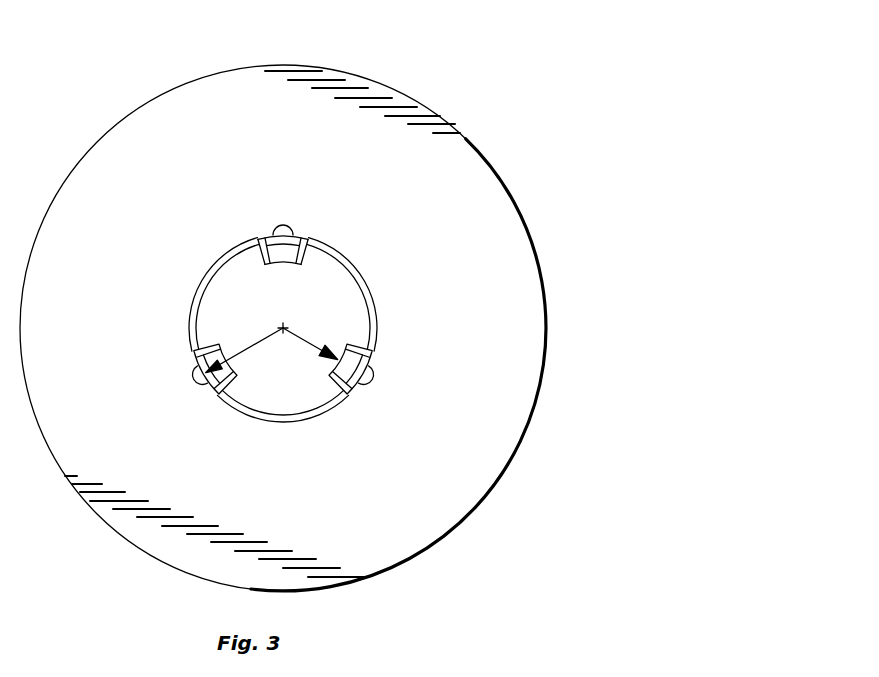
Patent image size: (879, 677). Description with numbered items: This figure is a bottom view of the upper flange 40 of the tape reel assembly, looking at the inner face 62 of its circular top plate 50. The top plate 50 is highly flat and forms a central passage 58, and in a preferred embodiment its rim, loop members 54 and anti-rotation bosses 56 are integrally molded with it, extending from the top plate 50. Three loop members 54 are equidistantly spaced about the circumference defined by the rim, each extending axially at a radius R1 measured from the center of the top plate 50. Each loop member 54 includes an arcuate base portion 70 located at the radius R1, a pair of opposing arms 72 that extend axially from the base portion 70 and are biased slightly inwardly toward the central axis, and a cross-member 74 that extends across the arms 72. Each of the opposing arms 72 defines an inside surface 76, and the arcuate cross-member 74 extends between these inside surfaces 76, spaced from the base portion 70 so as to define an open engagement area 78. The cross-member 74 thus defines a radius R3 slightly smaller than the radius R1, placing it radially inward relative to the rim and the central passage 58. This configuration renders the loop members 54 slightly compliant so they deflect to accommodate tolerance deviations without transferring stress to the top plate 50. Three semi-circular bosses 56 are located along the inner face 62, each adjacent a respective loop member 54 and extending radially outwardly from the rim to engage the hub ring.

The upper flange 40 is at (483, 72).
The top plate 50 is at (455, 153).
The inner face 62 is at (513, 263).
The loop members 54 is at (212, 343).
The anti-rotation bosses 56 is at (193, 380).
The central passage 58 is at (319, 416).
The base portion 70 is at (298, 238).
The opposing arms 72 is at (260, 252).
The cross-member 74 is at (278, 264).
The inside surface 76 is at (288, 264).
The open engagement area 78 is at (356, 361).
The radius R1 is at (247, 349).
The radius R3 is at (300, 343).